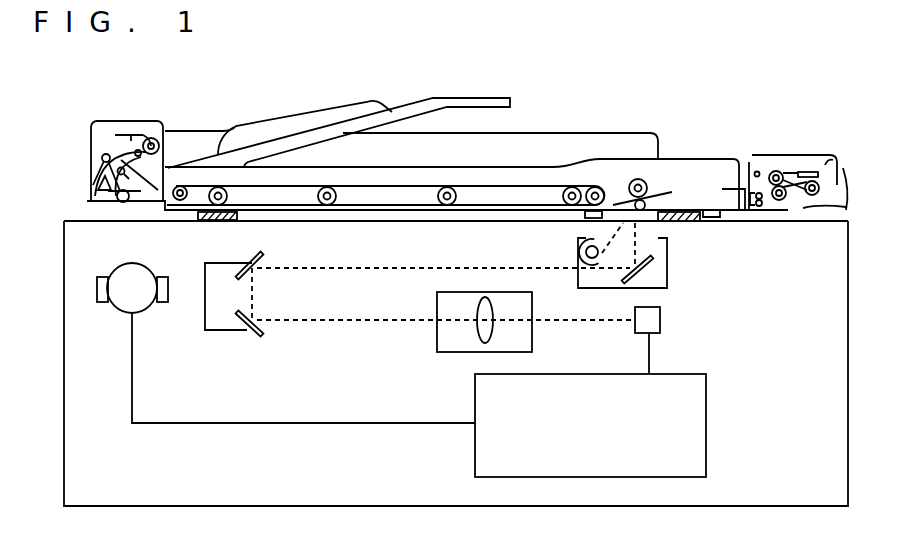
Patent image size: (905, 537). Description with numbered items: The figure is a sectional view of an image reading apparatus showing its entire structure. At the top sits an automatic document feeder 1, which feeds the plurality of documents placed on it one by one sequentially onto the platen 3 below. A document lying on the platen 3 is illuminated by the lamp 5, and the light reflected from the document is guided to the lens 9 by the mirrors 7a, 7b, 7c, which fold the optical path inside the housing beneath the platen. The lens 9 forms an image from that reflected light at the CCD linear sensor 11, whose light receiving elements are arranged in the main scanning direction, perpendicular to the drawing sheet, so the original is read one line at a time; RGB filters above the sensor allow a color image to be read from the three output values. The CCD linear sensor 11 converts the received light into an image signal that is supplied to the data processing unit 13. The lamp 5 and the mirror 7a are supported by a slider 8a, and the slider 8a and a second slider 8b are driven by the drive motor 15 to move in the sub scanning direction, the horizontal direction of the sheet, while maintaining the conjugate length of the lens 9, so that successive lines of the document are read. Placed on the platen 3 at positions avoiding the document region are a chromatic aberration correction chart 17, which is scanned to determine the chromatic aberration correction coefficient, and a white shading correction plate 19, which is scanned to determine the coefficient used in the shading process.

The automatic document feeder 1 is at (697, 157).
The platen 3 is at (386, 224).
The lamp 5 is at (577, 248).
The mirror 7a is at (653, 263).
The mirror 7b is at (254, 260).
The mirror 7c is at (266, 330).
The slider 8a is at (667, 279).
The slider 8b is at (225, 333).
The lens 9 is at (477, 311).
The CCD linear sensor 11 is at (661, 320).
The data processing unit 13 is at (707, 431).
The drive motor 15 is at (122, 267).
The chromatic aberration correction chart 17 is at (199, 226).
The shading correction plate 19 is at (686, 221).